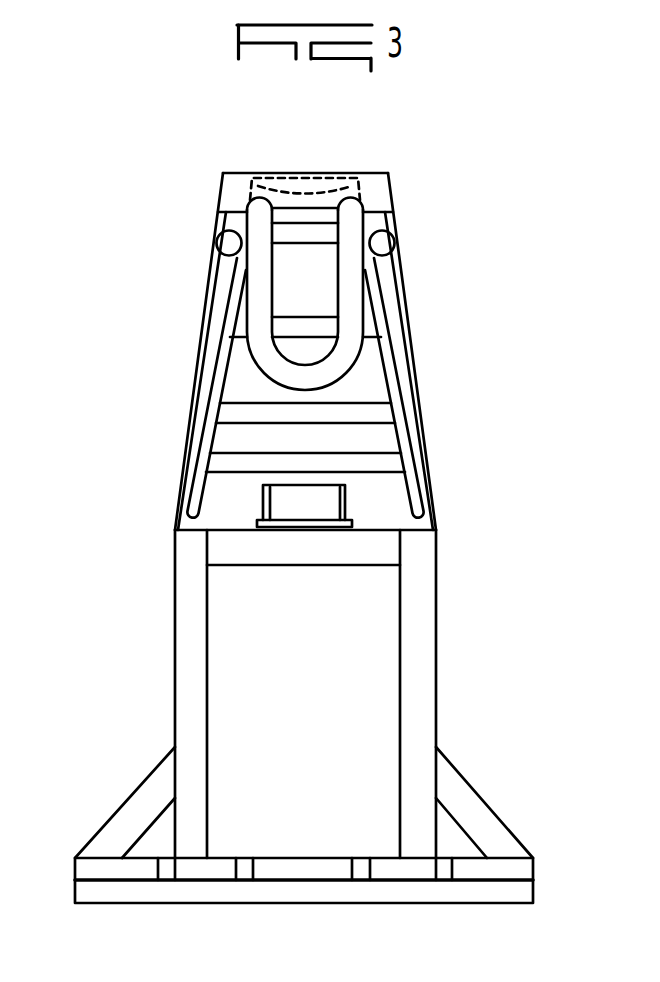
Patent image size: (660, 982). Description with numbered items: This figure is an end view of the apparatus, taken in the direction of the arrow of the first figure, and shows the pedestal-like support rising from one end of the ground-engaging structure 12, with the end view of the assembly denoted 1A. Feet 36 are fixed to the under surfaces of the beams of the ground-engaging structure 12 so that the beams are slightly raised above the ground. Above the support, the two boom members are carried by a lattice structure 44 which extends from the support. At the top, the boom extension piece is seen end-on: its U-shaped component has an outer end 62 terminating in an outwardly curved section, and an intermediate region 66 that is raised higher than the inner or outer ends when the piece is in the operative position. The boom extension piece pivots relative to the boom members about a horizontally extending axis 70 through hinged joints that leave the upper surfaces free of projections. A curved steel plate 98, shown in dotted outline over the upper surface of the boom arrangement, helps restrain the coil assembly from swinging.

The support assembly 1A is at (447, 647).
The ground-engaging structure 12 is at (528, 865).
The feet 36 is at (528, 891).
The lattice structure 44 is at (407, 400).
The outer end 62 is at (308, 380).
The intermediate region 66 is at (362, 178).
The horizontally extending axis 70 is at (406, 242).
The curved steel plate 98 is at (258, 186).